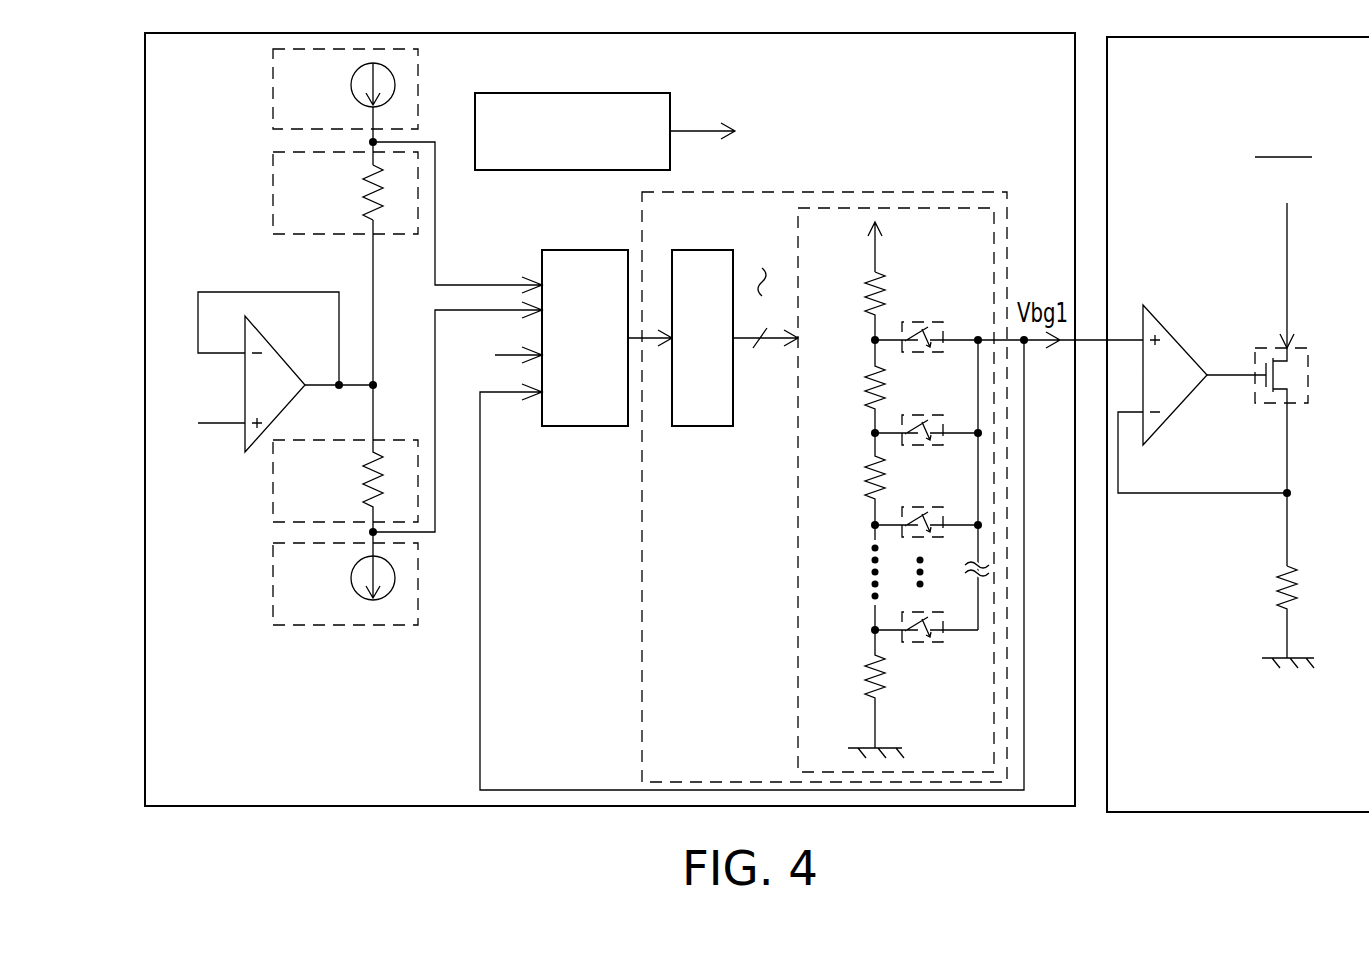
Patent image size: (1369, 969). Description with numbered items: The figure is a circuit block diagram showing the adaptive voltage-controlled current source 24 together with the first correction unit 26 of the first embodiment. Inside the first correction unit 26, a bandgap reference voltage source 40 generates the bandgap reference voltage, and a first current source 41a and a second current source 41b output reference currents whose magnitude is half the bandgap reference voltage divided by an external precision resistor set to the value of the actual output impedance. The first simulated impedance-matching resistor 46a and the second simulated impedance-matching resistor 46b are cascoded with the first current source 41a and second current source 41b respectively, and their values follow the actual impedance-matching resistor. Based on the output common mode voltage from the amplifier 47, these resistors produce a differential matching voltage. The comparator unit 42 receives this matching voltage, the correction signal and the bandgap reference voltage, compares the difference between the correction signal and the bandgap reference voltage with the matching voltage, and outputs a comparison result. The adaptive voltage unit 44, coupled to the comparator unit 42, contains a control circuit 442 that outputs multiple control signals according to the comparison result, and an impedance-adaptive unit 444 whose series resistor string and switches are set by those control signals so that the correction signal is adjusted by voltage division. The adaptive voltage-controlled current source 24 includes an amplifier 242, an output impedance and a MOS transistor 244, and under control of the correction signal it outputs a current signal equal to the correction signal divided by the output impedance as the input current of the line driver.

The first correction unit 26 is at (610, 419).
The adaptive voltage-controlled current source 24 is at (1238, 424).
The bandgap reference voltage source 40 is at (636, 131).
The first current source 41a is at (345, 107).
The second current source 41b is at (345, 584).
The comparator unit 42 is at (731, 520).
The adaptive voltage unit 44 is at (824, 487).
The control circuit 442 is at (735, 333).
The impedance-adaptive unit 444 is at (896, 490).
The first simulated impedance-matching resistor 46a is at (345, 268).
The second simulated impedance-matching resistor 46b is at (345, 470).
The amplifier 47 is at (262, 372).
The amplifier 242 is at (1202, 399).
The MOS transistor 244 is at (1306, 344).